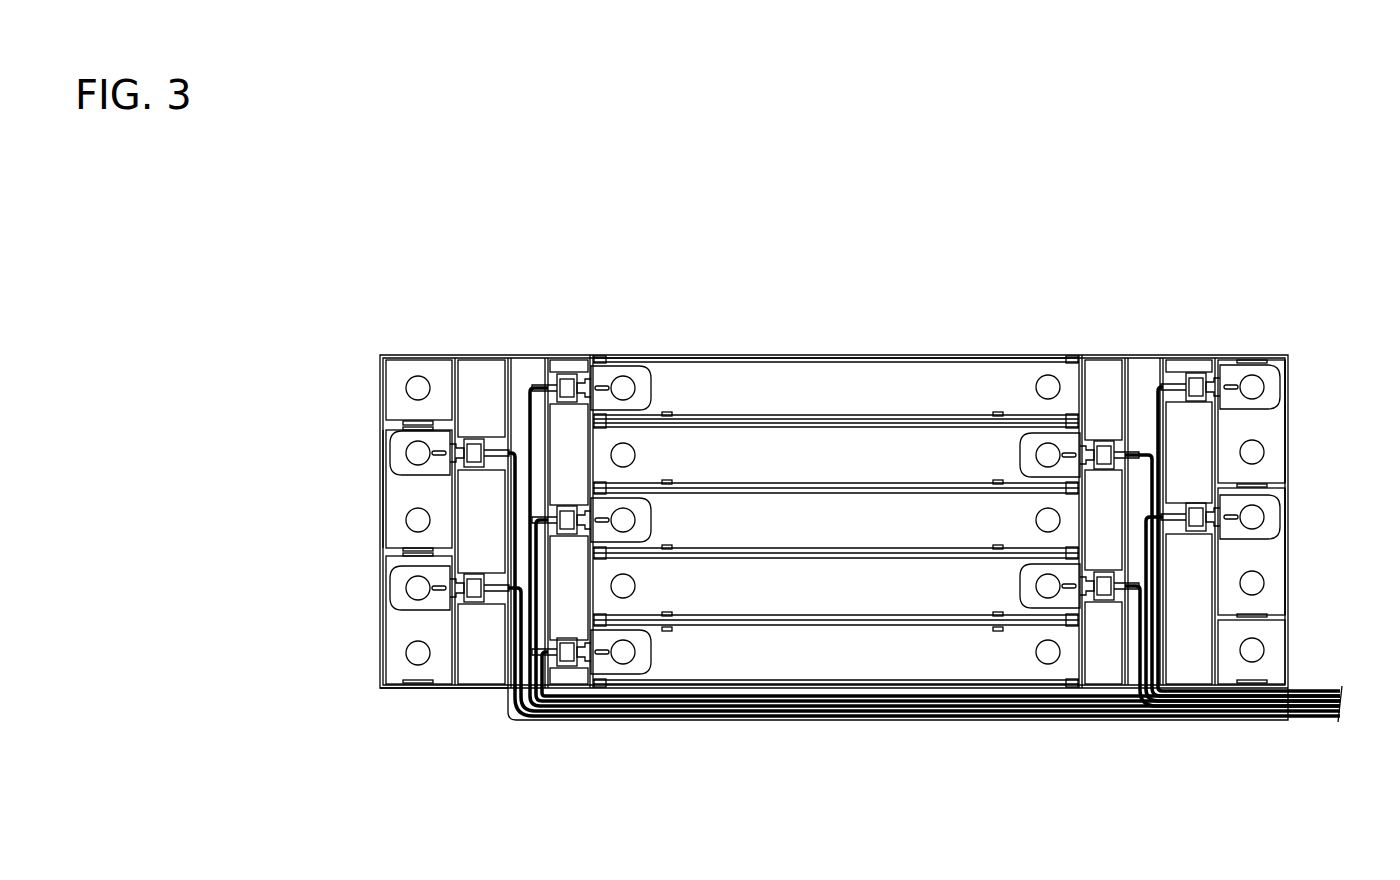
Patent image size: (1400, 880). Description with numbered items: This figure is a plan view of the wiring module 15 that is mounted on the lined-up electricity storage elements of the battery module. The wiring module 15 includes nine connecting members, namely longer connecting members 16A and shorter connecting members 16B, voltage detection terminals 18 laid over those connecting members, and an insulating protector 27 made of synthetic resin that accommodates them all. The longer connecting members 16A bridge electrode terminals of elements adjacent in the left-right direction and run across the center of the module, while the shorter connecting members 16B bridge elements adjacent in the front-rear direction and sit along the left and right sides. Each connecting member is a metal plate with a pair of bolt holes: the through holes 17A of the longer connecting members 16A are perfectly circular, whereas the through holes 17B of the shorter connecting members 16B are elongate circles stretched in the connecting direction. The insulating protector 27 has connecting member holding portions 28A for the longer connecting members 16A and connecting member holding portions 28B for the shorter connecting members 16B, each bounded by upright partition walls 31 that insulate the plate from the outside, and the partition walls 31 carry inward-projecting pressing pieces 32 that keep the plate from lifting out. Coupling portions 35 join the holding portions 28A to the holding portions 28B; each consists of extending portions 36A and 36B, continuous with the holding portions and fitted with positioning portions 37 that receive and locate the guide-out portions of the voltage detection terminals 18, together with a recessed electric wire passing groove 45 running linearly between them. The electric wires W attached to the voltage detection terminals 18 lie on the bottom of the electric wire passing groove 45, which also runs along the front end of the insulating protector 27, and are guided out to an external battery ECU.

The wiring module 15 is at (1042, 198).
The longer connecting member 16A is at (783, 450).
The shorter connecting member 16B is at (400, 495).
The through hole 17A is at (1042, 378).
The through hole 17B is at (408, 522).
The voltage detection terminal 18 is at (435, 408).
The insulating protector 27 is at (828, 343).
The connecting member holding portion 28A is at (922, 413).
The connecting member holding portion 28B is at (383, 435).
The partition wall 31 is at (383, 430).
The pressing piece 32 is at (667, 372).
The coupling portion 35 is at (580, 247).
The extending portion 36A is at (480, 365).
The extending portion 36B is at (560, 365).
The positioning portion 37 is at (568, 380).
The electric wire passing groove 45 is at (527, 365).
The electric wire W is at (584, 692).